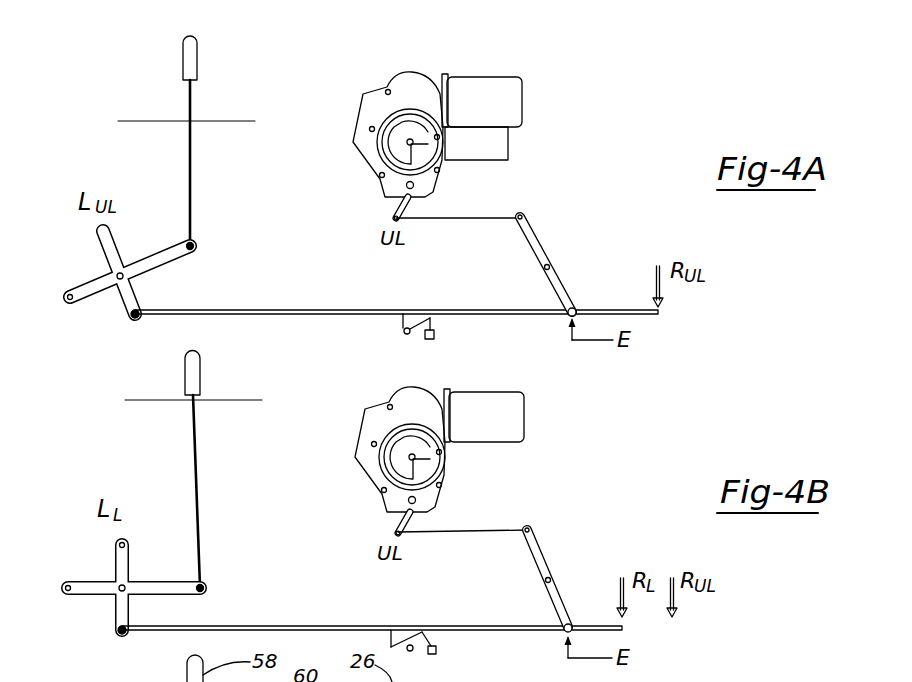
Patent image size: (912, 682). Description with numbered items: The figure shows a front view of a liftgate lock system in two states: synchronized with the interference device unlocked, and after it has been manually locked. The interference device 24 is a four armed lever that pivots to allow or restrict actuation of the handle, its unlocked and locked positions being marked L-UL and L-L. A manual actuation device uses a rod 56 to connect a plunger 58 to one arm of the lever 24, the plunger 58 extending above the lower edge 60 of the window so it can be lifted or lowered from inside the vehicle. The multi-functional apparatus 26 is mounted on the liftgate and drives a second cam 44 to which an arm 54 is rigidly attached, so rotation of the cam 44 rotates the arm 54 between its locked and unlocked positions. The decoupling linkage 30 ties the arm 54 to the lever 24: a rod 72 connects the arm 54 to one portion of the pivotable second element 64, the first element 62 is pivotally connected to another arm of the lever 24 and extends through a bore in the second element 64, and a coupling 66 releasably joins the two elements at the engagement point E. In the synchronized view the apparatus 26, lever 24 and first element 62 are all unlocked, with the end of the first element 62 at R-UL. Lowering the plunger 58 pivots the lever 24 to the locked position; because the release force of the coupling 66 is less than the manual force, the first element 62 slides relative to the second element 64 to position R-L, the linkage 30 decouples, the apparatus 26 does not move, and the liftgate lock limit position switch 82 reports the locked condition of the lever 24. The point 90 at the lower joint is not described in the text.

In FIG. 4A, the interference device 24 is at (91, 295).
In FIG. 4B, the interference device 24 is at (91, 592).
In FIG. 4A, the multi-functional apparatus 26 is at (413, 63).
In FIG. 4B, the multi-functional apparatus 26 is at (382, 392).
In FIG. 4A, the decoupling linkage 30 is at (562, 222).
In FIG. 4B, the decoupling linkage 30 is at (573, 503).
In FIG. 4B, the second cam 44 is at (437, 498).
In FIG. 4A, the arm 54 is at (393, 208).
In FIG. 4B, the arm 54 is at (395, 527).
In FIG. 4A, the rod 56 is at (193, 190).
In FIG. 4B, the rod 56 is at (197, 477).
In FIG. 4A, the plunger 58 is at (190, 48).
In FIG. 4B, the plunger 58 is at (196, 350).
In FIG. 4A, the lower edge 60 is at (215, 121).
In FIG. 4B, the lower edge 60 is at (227, 400).
In FIG. 4A, the first element 62 is at (307, 310).
In FIG. 4B, the first element 62 is at (325, 627).
In FIG. 4A, the second element 64 is at (530, 250).
In FIG. 4B, the second element 64 is at (547, 552).
In FIG. 4A, the coupling 66 is at (577, 303).
In FIG. 4B, the coupling 66 is at (571, 605).
In FIG. 4A, the rod 72 is at (483, 217).
In FIG. 4B, the rod 72 is at (488, 533).
In FIG. 4A, the liftgate lock limit position switch 82 is at (436, 334).
In FIG. 4B, the liftgate lock limit position switch 82 is at (437, 650).
In FIG. 4A, the pivot point 90 is at (566, 318).
In FIG. 4B, the pivot point 90 is at (565, 634).